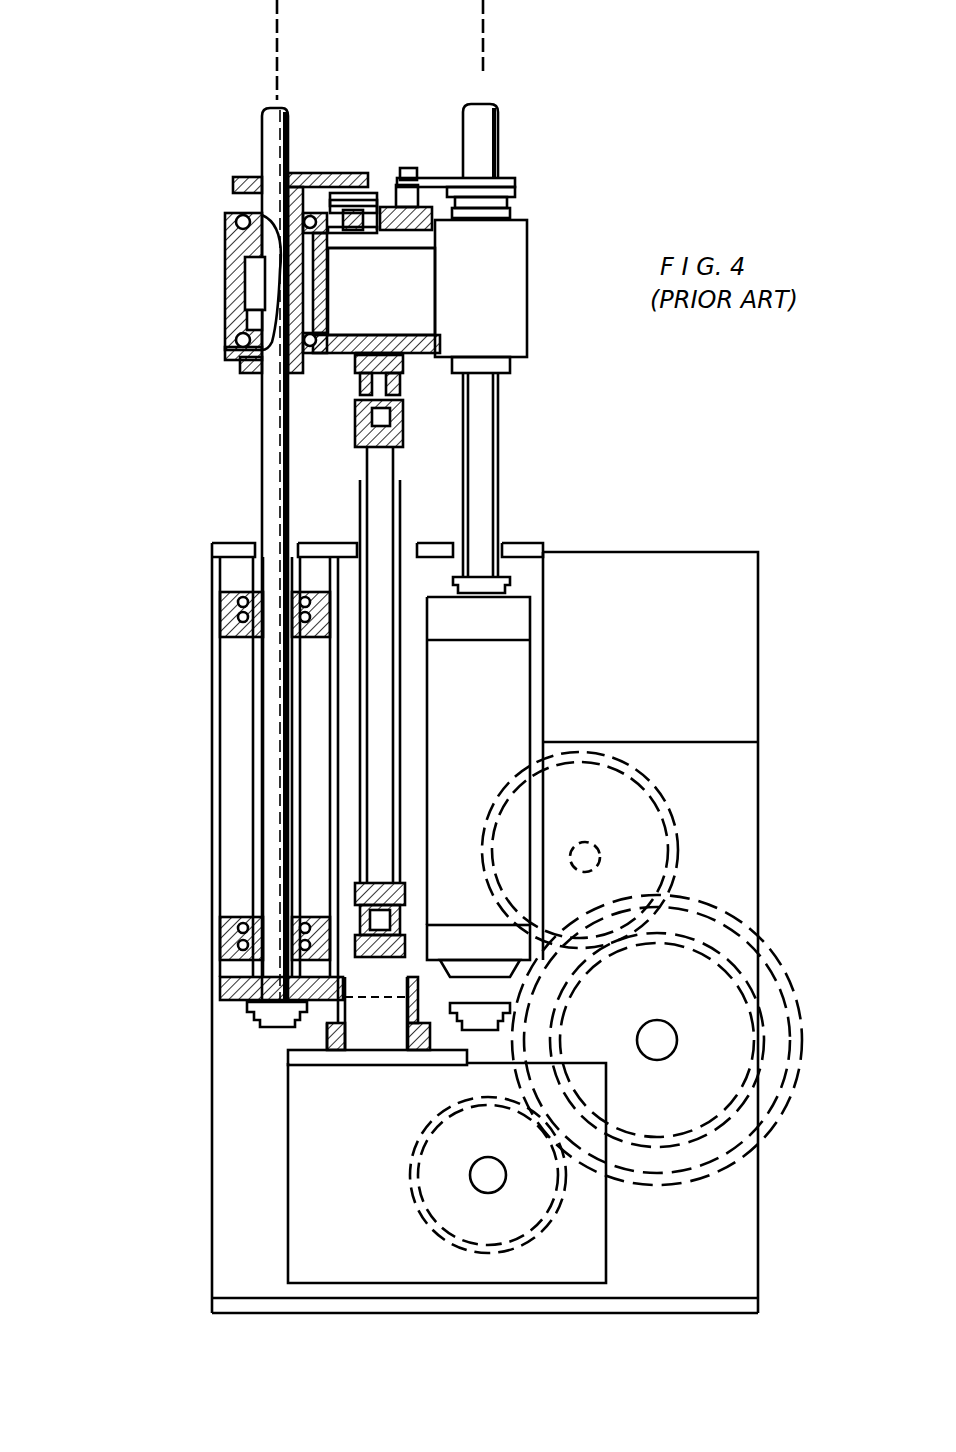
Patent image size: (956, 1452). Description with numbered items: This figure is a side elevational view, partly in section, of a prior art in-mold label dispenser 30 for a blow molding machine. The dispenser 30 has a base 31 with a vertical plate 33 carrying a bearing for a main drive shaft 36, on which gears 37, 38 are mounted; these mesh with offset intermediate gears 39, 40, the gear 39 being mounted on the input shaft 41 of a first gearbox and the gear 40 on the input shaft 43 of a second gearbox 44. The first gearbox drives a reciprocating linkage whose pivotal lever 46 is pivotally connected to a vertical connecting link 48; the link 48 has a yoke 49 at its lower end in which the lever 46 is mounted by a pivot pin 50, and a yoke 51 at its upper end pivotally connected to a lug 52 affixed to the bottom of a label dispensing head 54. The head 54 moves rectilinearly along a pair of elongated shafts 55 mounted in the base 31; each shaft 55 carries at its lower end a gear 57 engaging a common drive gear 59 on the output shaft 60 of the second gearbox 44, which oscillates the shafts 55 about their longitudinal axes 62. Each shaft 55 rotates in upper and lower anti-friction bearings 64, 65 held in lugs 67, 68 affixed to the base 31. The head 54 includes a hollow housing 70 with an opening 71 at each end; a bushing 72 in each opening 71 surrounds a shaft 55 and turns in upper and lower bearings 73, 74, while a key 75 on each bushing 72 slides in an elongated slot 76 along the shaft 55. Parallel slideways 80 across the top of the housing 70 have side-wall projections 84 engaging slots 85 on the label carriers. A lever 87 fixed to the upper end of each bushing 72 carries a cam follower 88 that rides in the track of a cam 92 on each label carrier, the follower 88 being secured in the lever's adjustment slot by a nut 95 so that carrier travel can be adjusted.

The in-mold label dispenser 30 is at (138, 148).
The base 31 is at (432, 545).
The vertical plate 33 is at (757, 1218).
The main drive shaft 36 is at (655, 1020).
The gear 37 is at (768, 985).
The gear 38 is at (730, 1055).
The intermediate gear 39 is at (640, 828).
The intermediate gear 40 is at (445, 1205).
The input shaft 41 is at (583, 852).
The input shaft 43 is at (492, 1182).
The second gearbox 44 is at (332, 1272).
The pivotal lever 46 is at (380, 960).
The connecting link 48 is at (383, 716).
The yoke 49 is at (395, 900).
The pivot pin 50 is at (398, 930).
The yoke 51 is at (358, 432).
The lug 52 is at (370, 335).
The label dispensing head 54 is at (535, 240).
The elongated shaft 55 is at (262, 125).
The gear 57 is at (235, 992).
The drive gear 59 is at (330, 1042).
The output shaft 60 is at (355, 1013).
The longitudinal axis 62 is at (278, 48).
The upper anti-friction bearing 64 is at (225, 606).
The lower anti-friction bearing 65 is at (225, 946).
The lug 67 is at (225, 625).
The lug 68 is at (225, 925).
The hollow housing 70 is at (228, 272).
The opening 71 is at (262, 260).
The bushing 72 is at (240, 180).
The upper anti-friction bearing 73 is at (236, 222).
The lower anti-friction bearing 74 is at (236, 340).
The key 75 is at (252, 290).
The elongated slot 76 is at (254, 320).
The slideway 80 is at (381, 268).
The projection 84 is at (378, 207).
The slot 85 is at (381, 291).
The lever 87 is at (308, 177).
The cam follower 88 is at (355, 210).
The cam 92 is at (335, 195).
The nut 95 is at (408, 168).